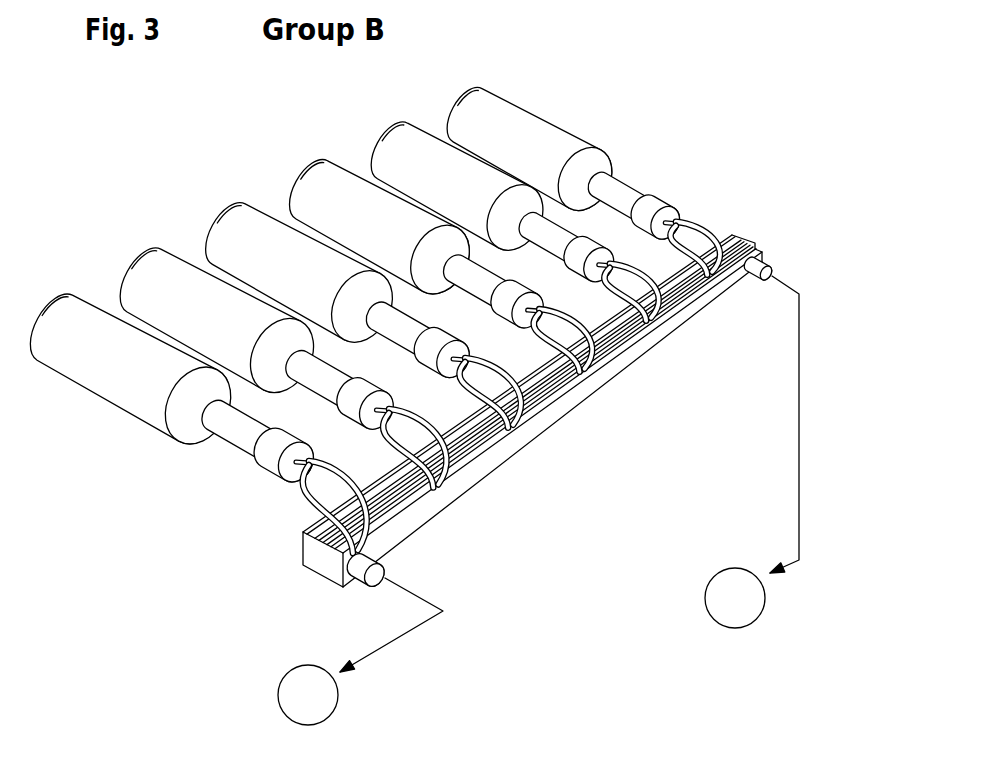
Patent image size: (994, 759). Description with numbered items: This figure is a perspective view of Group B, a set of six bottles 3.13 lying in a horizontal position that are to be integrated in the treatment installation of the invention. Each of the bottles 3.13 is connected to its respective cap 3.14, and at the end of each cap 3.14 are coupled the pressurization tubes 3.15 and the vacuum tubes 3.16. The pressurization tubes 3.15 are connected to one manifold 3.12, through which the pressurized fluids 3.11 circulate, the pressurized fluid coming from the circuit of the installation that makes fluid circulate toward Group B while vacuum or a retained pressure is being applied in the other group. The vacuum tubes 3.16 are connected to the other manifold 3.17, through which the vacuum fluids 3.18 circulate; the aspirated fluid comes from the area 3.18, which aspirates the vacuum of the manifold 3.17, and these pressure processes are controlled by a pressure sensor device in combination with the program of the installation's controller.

The pressurized fluids 3.11 is at (352, 677).
The manifold 3.12 is at (383, 573).
The bottles 3.13 is at (148, 398).
The caps 3.14 is at (275, 467).
The pressurization tubes 3.15 is at (337, 472).
The vacuum tubes 3.16 is at (695, 252).
The manifold 3.17 is at (763, 262).
The vacuum fluids 3.18 is at (766, 566).